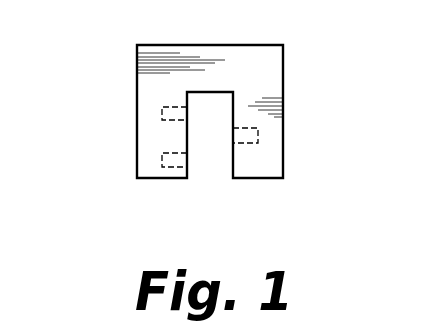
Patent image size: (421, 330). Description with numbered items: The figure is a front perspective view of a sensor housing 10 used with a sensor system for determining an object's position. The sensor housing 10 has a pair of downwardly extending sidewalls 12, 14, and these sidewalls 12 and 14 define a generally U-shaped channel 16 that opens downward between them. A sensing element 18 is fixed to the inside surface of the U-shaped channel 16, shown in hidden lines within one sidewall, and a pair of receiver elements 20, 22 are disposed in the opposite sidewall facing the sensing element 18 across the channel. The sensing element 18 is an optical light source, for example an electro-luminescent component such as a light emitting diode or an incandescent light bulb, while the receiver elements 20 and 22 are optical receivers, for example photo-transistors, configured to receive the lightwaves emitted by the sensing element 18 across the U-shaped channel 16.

The sensor housing 10 is at (277, 60).
The sidewall 12 is at (277, 162).
The sidewall 14 is at (147, 146).
The U-shaped channel 16 is at (212, 158).
The sensing element 18 is at (258, 135).
The receiver element 20 is at (162, 112).
The receiver element 22 is at (162, 160).